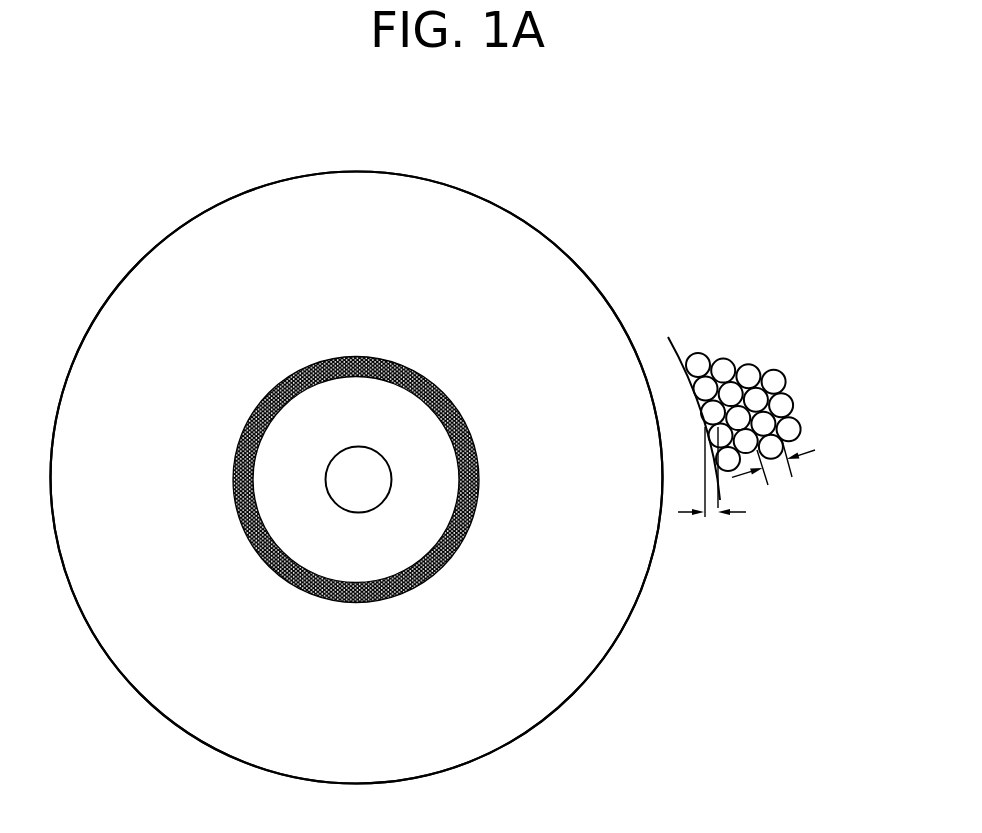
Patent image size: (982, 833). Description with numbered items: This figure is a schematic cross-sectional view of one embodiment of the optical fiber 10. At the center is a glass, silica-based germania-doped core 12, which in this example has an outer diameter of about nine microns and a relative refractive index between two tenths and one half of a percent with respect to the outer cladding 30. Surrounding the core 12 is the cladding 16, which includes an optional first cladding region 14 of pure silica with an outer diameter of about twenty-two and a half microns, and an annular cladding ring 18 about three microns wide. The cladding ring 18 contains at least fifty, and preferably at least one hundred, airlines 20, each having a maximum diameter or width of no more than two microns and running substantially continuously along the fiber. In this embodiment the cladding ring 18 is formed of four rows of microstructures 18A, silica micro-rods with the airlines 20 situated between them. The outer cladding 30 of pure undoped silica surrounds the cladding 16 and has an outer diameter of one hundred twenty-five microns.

The optical fiber 10 is at (127, 122).
The core 12 is at (404, 442).
The first cladding region 14 is at (375, 397).
The cladding 16 is at (493, 422).
The cladding ring 18 is at (369, 343).
The microstructures 18A is at (745, 349).
The airlines 20 is at (575, 507).
The outer cladding 30 is at (380, 247).